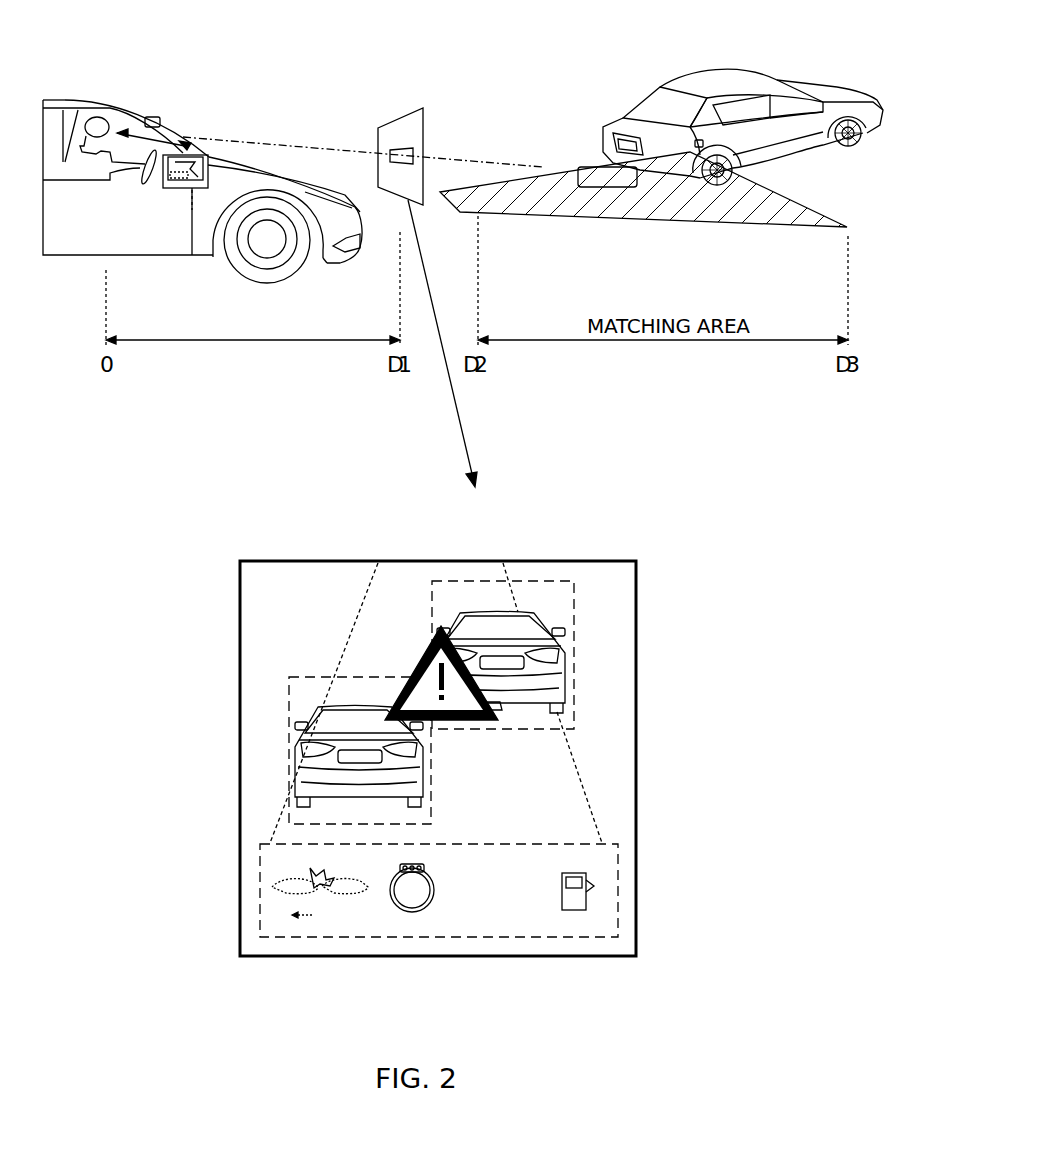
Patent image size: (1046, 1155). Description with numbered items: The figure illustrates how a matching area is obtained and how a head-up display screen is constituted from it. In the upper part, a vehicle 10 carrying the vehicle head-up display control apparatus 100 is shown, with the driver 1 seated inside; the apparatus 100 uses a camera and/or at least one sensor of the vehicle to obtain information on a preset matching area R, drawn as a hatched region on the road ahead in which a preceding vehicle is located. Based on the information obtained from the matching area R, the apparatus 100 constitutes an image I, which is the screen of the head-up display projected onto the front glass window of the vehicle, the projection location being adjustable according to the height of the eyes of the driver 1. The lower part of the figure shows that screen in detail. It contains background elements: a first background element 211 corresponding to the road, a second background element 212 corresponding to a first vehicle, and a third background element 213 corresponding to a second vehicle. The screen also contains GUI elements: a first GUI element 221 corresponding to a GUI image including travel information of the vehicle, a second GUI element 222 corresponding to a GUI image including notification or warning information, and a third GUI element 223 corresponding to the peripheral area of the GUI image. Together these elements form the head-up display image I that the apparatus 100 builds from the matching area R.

The vehicle 10 is at (64, 88).
The driver 1 is at (104, 104).
The vehicle head-up display control apparatus 100 is at (197, 153).
The image I is at (398, 118).
The matching area R is at (582, 165).
The first background element 211 is at (438, 561).
The second background element 212 is at (574, 583).
The third background element 213 is at (289, 700).
The first GUI element 221 is at (260, 888).
The second GUI element 222 is at (472, 722).
The third GUI element 223 is at (470, 707).